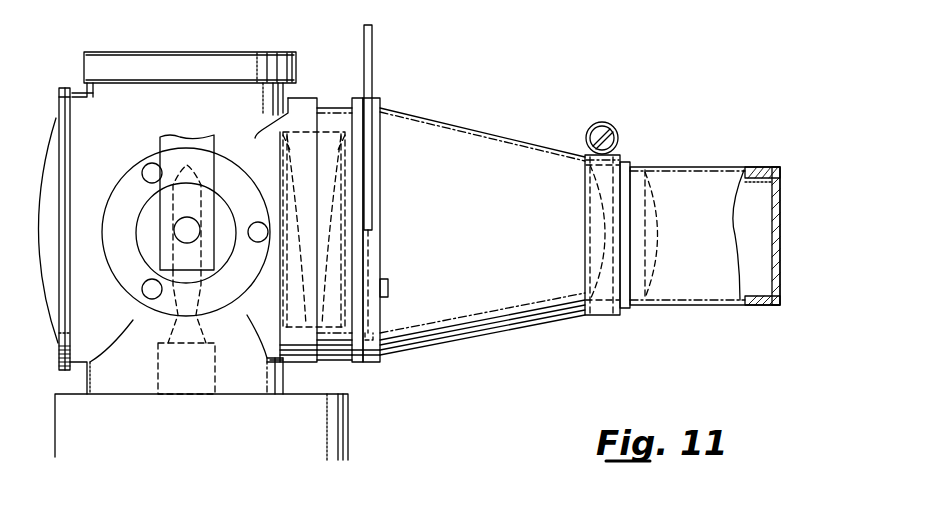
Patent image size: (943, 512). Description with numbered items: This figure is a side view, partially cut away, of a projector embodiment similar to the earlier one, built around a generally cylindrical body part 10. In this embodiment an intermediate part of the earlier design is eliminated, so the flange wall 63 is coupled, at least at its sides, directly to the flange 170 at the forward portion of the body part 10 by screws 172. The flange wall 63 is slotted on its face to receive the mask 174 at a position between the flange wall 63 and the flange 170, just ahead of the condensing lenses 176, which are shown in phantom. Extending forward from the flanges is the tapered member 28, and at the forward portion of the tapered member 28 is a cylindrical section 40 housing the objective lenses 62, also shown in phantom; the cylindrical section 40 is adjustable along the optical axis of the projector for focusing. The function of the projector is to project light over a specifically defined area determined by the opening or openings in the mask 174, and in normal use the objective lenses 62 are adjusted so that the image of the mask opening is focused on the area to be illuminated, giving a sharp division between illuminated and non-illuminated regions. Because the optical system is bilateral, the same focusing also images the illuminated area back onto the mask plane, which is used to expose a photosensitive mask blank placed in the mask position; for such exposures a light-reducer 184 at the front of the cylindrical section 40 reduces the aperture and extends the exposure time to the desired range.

The body part 10 is at (118, 132).
The tapered member 28 is at (490, 140).
The cylindrical section 40 is at (683, 165).
The objective lenses 62 is at (586, 262).
The flange wall 63 is at (383, 100).
The flange 170 is at (360, 98).
The screws 172 is at (390, 292).
The mask 174 is at (373, 33).
The condensing lenses 176 is at (273, 368).
The light-reducer 184 is at (778, 185).